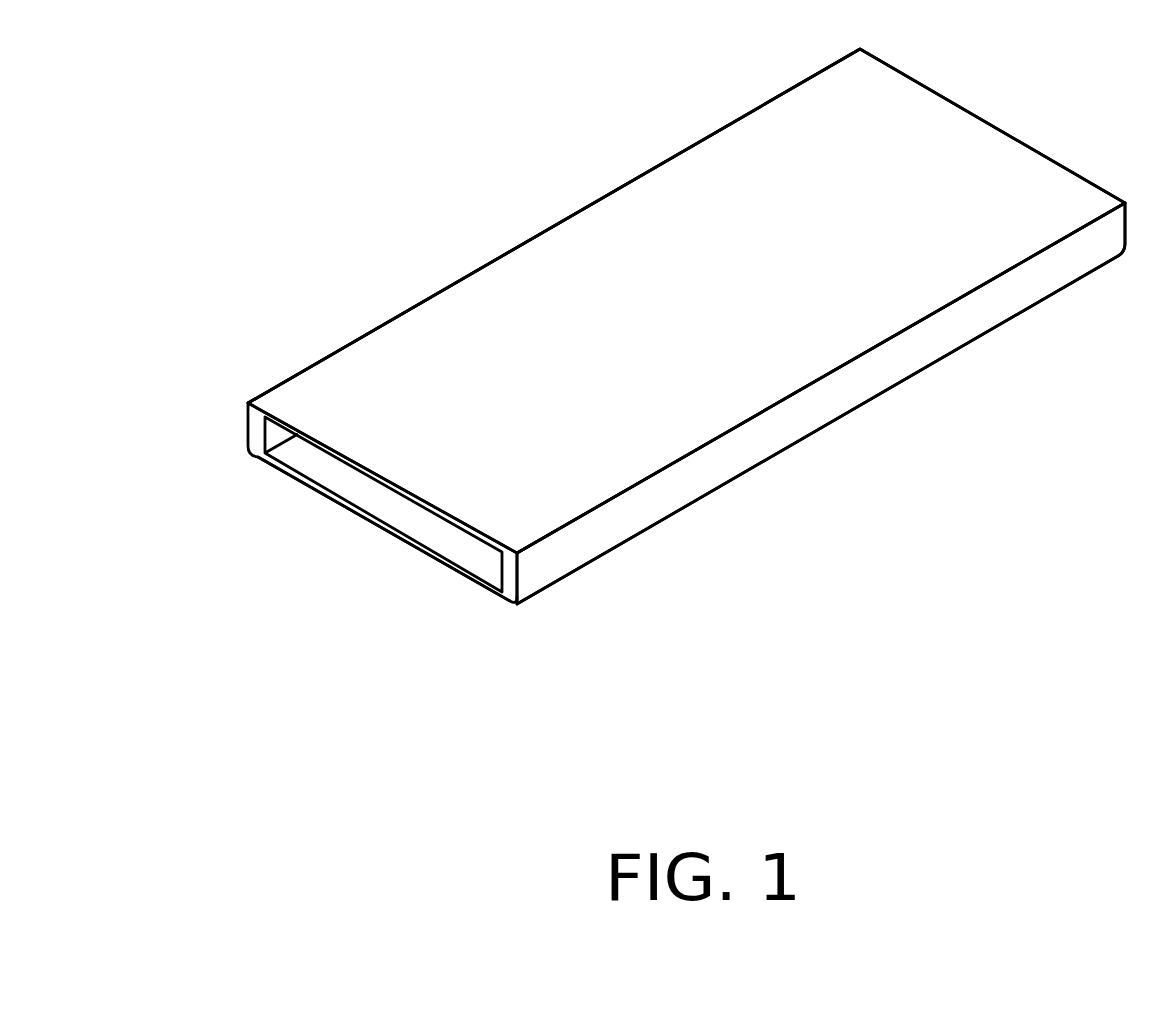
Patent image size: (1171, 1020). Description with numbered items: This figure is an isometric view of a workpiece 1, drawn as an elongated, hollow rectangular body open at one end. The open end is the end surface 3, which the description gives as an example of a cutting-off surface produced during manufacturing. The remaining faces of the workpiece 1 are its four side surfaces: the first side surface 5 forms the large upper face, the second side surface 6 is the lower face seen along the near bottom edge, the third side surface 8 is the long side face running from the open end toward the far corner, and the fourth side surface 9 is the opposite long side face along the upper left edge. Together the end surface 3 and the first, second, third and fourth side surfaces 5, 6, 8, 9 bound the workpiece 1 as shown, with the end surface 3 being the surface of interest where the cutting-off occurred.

The workpiece 1 is at (546, 168).
The end surface 3 is at (258, 433).
The first side surface 5 is at (998, 198).
The second side surface 6 is at (423, 555).
The third side surface 8 is at (752, 445).
The fourth side surface 9 is at (452, 282).